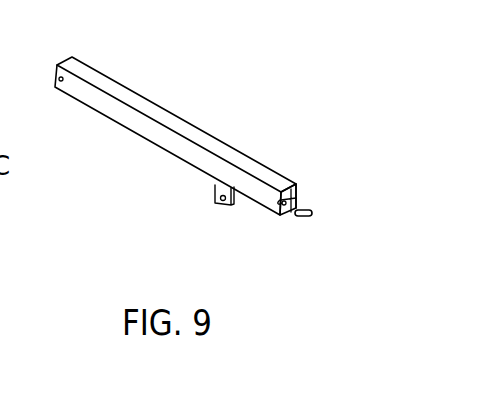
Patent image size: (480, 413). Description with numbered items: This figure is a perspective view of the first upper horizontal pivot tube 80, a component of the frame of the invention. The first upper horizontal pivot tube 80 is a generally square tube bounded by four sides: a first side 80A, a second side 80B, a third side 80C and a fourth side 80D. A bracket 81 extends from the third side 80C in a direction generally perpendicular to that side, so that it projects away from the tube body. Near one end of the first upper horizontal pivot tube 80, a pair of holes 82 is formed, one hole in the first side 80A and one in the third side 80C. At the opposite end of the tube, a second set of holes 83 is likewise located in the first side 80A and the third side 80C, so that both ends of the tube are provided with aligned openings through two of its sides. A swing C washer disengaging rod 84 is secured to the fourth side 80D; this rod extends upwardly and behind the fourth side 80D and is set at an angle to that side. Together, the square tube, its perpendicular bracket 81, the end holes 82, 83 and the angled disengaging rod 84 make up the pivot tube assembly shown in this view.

The first upper horizontal pivot tube 80 is at (201, 151).
The first side 80A is at (120, 93).
The second side 80B is at (152, 135).
The third side 80C is at (286, 217).
The fourth side 80D is at (300, 196).
The bracket 81 is at (224, 207).
The pair of holes 82 is at (59, 79).
The second set of holes 83 is at (293, 197).
The swing C washer disengaging rod 84 is at (304, 218).